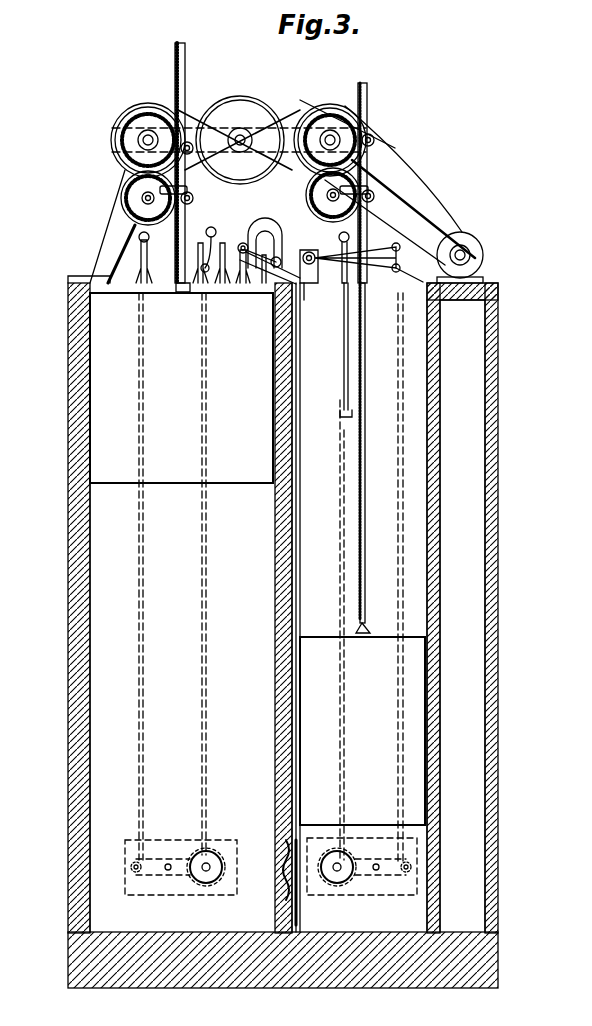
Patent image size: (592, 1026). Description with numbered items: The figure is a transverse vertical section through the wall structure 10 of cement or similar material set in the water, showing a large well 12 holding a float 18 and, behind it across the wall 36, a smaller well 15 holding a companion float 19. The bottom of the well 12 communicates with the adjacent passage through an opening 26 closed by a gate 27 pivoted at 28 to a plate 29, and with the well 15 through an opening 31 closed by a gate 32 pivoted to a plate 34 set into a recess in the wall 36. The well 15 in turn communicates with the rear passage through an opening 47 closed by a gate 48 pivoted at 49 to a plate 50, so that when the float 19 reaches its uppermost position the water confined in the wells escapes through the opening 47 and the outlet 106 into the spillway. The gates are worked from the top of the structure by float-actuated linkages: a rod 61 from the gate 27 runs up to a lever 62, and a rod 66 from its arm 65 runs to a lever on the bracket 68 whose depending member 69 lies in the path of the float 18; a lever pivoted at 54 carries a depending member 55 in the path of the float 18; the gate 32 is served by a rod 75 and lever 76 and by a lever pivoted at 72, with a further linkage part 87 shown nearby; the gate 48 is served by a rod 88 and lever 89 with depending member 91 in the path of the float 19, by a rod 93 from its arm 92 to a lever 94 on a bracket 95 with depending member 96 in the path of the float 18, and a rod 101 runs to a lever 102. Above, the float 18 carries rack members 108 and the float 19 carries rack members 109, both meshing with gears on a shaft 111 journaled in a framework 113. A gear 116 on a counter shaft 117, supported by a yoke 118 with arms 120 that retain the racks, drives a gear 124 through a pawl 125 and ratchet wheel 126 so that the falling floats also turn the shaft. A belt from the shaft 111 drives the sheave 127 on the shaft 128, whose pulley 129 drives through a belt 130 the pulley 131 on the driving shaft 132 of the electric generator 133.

The wall structure 10 is at (68, 595).
The well or pit 12 is at (100, 644).
The well 15 is at (455, 585).
The float 18 is at (110, 372).
The float 19 is at (418, 683).
The opening 26 is at (213, 858).
The gate 27 is at (178, 876).
The pivot 28 is at (170, 860).
The plate 29 is at (206, 886).
The opening 31 is at (272, 884).
The gate 32 is at (288, 842).
The plate 34 is at (292, 885).
The wall 36 is at (276, 600).
The opening 47 is at (332, 850).
The gate 48 is at (336, 884).
The pivot 49 is at (376, 858).
The plate 50 is at (380, 900).
The pivot 54 is at (176, 278).
The depending member 55 is at (190, 296).
The rod 61 is at (208, 711).
The lever 62 is at (218, 236).
The arm 65 is at (142, 878).
The rod 66 is at (146, 746).
The bracket 68 is at (128, 262).
The depending member 69 is at (141, 296).
The pivot 72 is at (248, 292).
The rod 75 is at (299, 590).
The lever 76 is at (262, 230).
The lever 87 is at (255, 294).
The rod 88 is at (342, 716).
The lever 89 is at (340, 238).
The depending member 91 is at (340, 410).
The arm 92 is at (420, 885).
The rod 93 is at (396, 458).
The lever 94 is at (378, 286).
The bracket 95 is at (310, 297).
The depending member 96 is at (262, 292).
The rod 101 is at (414, 270).
The lever 102 is at (357, 257).
The outlet 106 is at (478, 470).
The rack members 108 is at (180, 44).
The rack members 109 is at (366, 84).
The shaft 111 is at (140, 140).
The framework 113 is at (108, 228).
The gear 116 is at (125, 190).
The counter shaft 117 is at (132, 228).
The yoke 118 is at (120, 170).
The arms 120 is at (185, 140).
The gear 124 is at (138, 118).
The pawl 125 is at (118, 110).
The ratchet wheel 126 is at (118, 115).
The sheave 127 is at (238, 128).
The shaft 128 is at (242, 132).
The pulley 129 is at (276, 108).
The belt 130 is at (420, 210).
The pulley 131 is at (466, 252).
The driving shaft 132 is at (478, 240).
The electric generator 133 is at (485, 258).